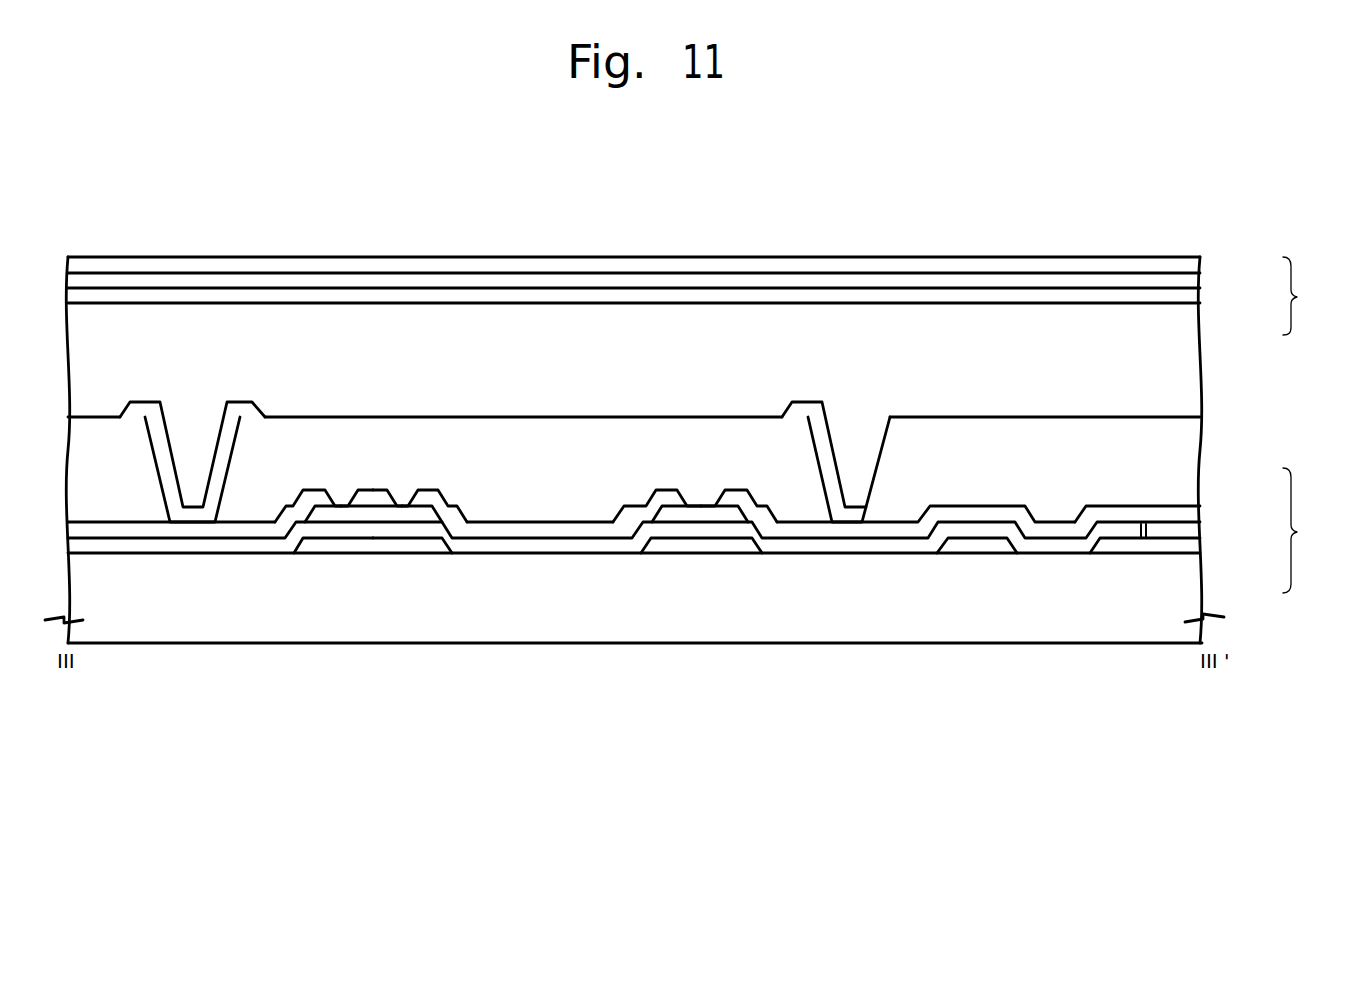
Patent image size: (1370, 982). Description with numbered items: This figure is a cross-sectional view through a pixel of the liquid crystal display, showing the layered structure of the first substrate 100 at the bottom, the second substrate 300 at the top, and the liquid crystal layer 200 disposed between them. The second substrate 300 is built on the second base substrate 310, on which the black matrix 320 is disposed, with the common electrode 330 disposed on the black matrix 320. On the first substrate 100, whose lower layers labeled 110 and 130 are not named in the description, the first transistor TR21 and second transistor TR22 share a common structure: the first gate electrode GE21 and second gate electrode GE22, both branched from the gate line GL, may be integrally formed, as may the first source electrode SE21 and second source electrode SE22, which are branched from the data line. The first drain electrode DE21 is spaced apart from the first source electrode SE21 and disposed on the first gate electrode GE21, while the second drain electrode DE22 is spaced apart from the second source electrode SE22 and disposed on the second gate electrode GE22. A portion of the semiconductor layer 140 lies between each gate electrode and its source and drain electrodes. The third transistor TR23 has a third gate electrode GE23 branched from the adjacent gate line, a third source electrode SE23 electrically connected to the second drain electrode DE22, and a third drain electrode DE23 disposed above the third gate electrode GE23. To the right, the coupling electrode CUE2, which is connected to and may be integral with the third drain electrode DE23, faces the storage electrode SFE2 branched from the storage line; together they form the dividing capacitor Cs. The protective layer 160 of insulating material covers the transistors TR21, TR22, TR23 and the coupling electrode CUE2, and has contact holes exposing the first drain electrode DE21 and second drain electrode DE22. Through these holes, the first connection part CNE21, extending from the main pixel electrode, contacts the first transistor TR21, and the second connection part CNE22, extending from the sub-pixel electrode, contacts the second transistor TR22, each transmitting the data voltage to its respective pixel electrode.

The second base substrate 310 is at (1195, 265).
The black matrix 320 is at (1198, 281).
The common electrode 330 is at (1200, 300).
The second substrate 300 is at (1309, 296).
The liquid crystal layer 200 is at (1185, 383).
The protective layer 160 is at (1185, 480).
The gate insulating layer 130 is at (1185, 533).
The first base substrate 110 is at (1185, 582).
The first substrate 100 is at (1309, 530).
The semiconductor layer 140 is at (407, 513).
The first connection part CNE21 is at (145, 410).
The second connection part CNE22 is at (803, 407).
The first transistor TR21 is at (280, 615).
The second transistor TR22 is at (465, 615).
The third transistor TR23 is at (698, 615).
The first drain electrode DE21 is at (318, 500).
The first gate electrode GE21 is at (317, 547).
The first source electrode SE21 is at (367, 500).
The second source electrode SE22 is at (385, 500).
The second gate electrode GE22 is at (429, 547).
The second drain electrode DE22 is at (432, 500).
The third source electrode SE23 is at (657, 498).
The third gate electrode GE23 is at (698, 545).
The third drain electrode DE23 is at (733, 498).
The gate line GL is at (973, 547).
The coupling electrode CUE2 is at (1108, 515).
The storage electrode SFE2 is at (1128, 547).
The dividing capacitor Cs is at (1136, 530).